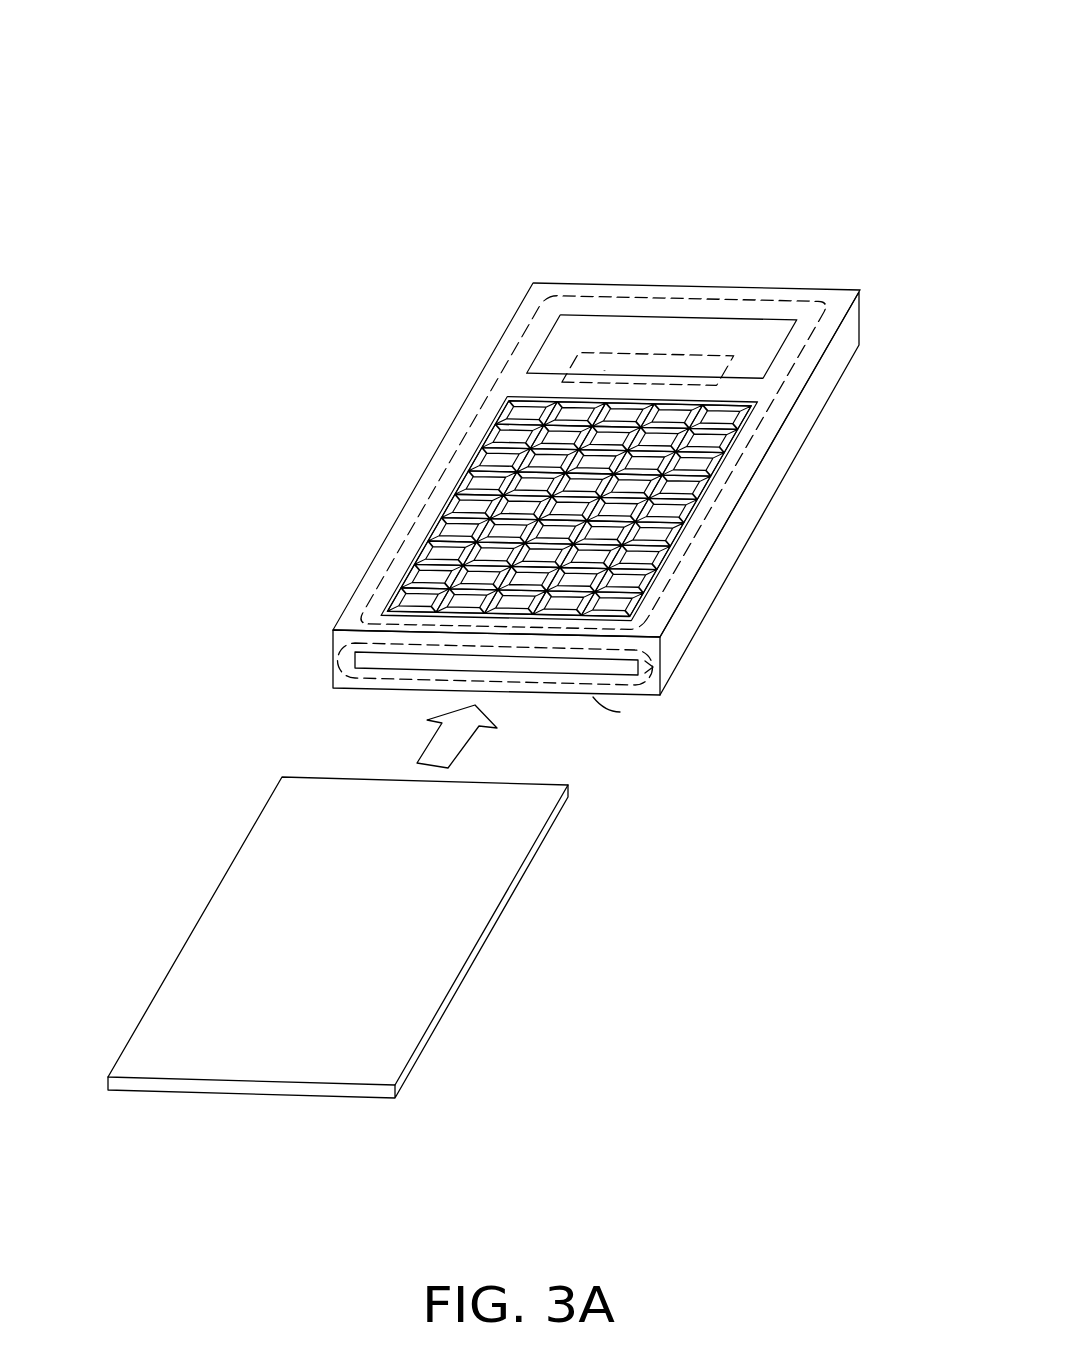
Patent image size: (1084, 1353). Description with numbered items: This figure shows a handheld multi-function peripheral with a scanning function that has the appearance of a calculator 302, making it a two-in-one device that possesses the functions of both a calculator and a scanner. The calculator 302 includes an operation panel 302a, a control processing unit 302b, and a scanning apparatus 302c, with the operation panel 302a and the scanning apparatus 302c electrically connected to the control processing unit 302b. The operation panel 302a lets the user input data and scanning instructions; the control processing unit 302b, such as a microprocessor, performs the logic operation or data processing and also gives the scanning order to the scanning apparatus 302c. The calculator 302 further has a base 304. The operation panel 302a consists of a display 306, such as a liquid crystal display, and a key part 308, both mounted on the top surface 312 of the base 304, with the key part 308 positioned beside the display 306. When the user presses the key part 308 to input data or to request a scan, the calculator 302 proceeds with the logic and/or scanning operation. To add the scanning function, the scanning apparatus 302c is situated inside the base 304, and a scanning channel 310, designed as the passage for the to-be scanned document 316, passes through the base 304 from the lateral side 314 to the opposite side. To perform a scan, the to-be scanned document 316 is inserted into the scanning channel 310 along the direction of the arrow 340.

The calculator 302 is at (538, 230).
The operation panel 302a is at (800, 297).
The control processing unit 302b is at (638, 352).
The scanning apparatus 302c is at (620, 712).
The base 304 is at (768, 468).
The display 306 is at (572, 356).
The key part 308 is at (495, 483).
The scanning channel 310 is at (373, 658).
The top surface 312 is at (742, 316).
The lateral side 314 is at (337, 652).
The to-be scanned document 316 is at (385, 992).
The arrow 340 is at (445, 745).